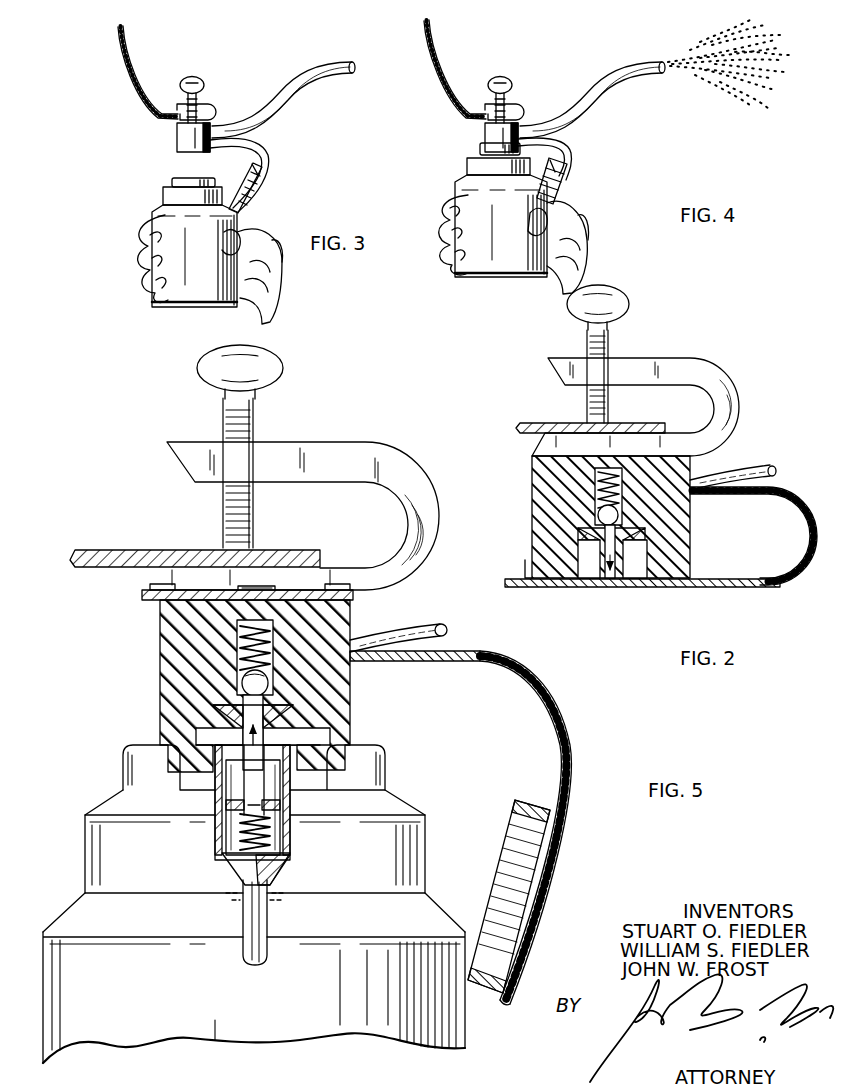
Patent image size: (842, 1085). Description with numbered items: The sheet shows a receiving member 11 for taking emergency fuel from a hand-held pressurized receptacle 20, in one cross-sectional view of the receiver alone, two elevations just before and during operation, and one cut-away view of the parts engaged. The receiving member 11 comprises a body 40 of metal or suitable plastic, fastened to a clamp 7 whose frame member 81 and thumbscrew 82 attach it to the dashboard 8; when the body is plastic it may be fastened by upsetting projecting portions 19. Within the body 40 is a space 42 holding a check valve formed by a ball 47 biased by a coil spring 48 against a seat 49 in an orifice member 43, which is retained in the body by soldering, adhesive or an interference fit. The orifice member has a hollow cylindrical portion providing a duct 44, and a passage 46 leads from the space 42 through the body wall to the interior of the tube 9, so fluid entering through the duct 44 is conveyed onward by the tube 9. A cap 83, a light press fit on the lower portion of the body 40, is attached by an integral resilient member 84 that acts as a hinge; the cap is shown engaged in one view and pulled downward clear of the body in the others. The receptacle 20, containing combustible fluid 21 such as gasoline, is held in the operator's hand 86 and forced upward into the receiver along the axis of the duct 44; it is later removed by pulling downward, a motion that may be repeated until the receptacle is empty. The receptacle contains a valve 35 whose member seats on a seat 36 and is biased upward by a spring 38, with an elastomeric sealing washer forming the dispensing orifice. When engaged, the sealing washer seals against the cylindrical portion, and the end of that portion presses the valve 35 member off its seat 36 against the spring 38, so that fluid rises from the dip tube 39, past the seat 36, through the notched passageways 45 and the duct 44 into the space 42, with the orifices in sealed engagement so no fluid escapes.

In FIG. 3, the clamp 7 is at (214, 97).
In FIG. 4, the clamp 7 is at (521, 92).
In FIG. 2, the clamp 7 is at (702, 342).
In FIG. 5, the clamp 7 is at (338, 432).
In FIG. 3, the dashboard 8 is at (135, 66).
In FIG. 4, the dashboard 8 is at (455, 69).
In FIG. 2, the dashboard 8 is at (546, 422).
In FIG. 5, the dashboard 8 is at (136, 549).
In FIG. 3, the tube 9 is at (322, 63).
In FIG. 4, the tube 9 is at (592, 82).
In FIG. 2, the tube 9 is at (740, 476).
In FIG. 5, the tube 9 is at (436, 623).
In FIG. 3, the receiving member 11 is at (177, 136).
In FIG. 4, the receiving member 11 is at (481, 137).
In FIG. 5, the receiving member 11 is at (130, 658).
In FIG. 5, the portions 19 is at (330, 590).
In FIG. 3, the pressurized valved receptacle 20 is at (150, 203).
In FIG. 4, the pressurized valved receptacle 20 is at (458, 168).
In FIG. 5, the pressurized valved receptacle 20 is at (100, 779).
In FIG. 5, the combustible fluid 21 is at (275, 918).
In FIG. 5, the valve spring 35 is at (272, 822).
In FIG. 5, the seat 36 is at (232, 830).
In FIG. 5, the spring 38 is at (270, 852).
In FIG. 5, the dip tube 39 is at (250, 952).
In FIG. 2, the body 40 is at (532, 490).
In FIG. 5, the body 40 is at (161, 630).
In FIG. 2, the space 42 is at (625, 522).
In FIG. 5, the space 42 is at (275, 635).
In FIG. 2, the orifice member 43 is at (640, 538).
In FIG. 5, the orifice member 43 is at (285, 724).
In FIG. 2, the duct or orifice 44 is at (596, 586).
In FIG. 5, the duct or orifice 44 is at (230, 711).
In FIG. 5, the notched passageways 45 is at (222, 785).
In FIG. 2, the passage 46 is at (690, 472).
In FIG. 5, the passage 46 is at (335, 640).
In FIG. 2, the ball 47 is at (597, 514).
In FIG. 5, the ball 47 is at (242, 680).
In FIG. 2, the coil spring 48 is at (625, 508).
In FIG. 5, the coil spring 48 is at (262, 598).
In FIG. 5, the seat 49 is at (268, 690).
In FIG. 2, the frame member 81 is at (632, 364).
In FIG. 5, the frame member 81 is at (278, 444).
In FIG. 2, the thumbscrew 82 is at (624, 311).
In FIG. 5, the thumbscrew 82 is at (272, 364).
In FIG. 3, the cap 83 is at (258, 190).
In FIG. 4, the cap 83 is at (569, 178).
In FIG. 2, the cap 83 is at (536, 588).
In FIG. 5, the cap 83 is at (548, 879).
In FIG. 3, the integral resilient member 84 is at (268, 146).
In FIG. 4, the integral resilient member 84 is at (573, 146).
In FIG. 2, the integral resilient member 84 is at (784, 586).
In FIG. 5, the integral resilient member 84 is at (552, 724).
In FIG. 3, the operator's hand 86 is at (275, 290).
In FIG. 4, the operator's hand 86 is at (587, 238).